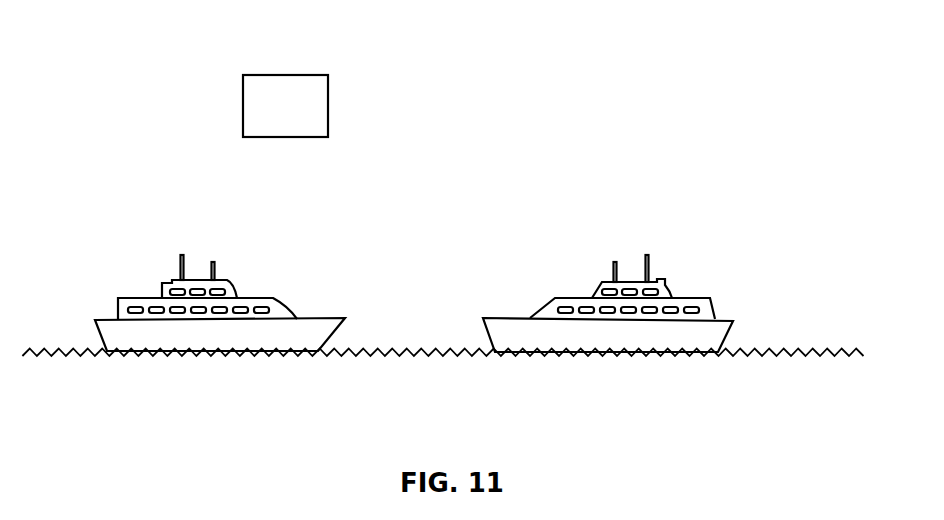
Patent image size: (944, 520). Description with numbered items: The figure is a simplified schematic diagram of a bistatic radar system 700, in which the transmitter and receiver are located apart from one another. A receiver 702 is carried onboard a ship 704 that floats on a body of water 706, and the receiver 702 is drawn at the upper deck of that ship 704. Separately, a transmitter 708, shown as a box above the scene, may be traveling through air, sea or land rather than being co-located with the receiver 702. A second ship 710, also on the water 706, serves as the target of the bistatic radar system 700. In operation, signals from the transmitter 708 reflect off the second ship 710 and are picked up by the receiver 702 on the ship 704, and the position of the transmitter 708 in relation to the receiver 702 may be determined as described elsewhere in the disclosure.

The bistatic radar system 700 is at (140, 50).
The receiver 702 is at (627, 283).
The ship 704 is at (730, 334).
The body of water 706 is at (437, 352).
The transmitter 708 is at (328, 105).
The second ship 710 is at (233, 296).